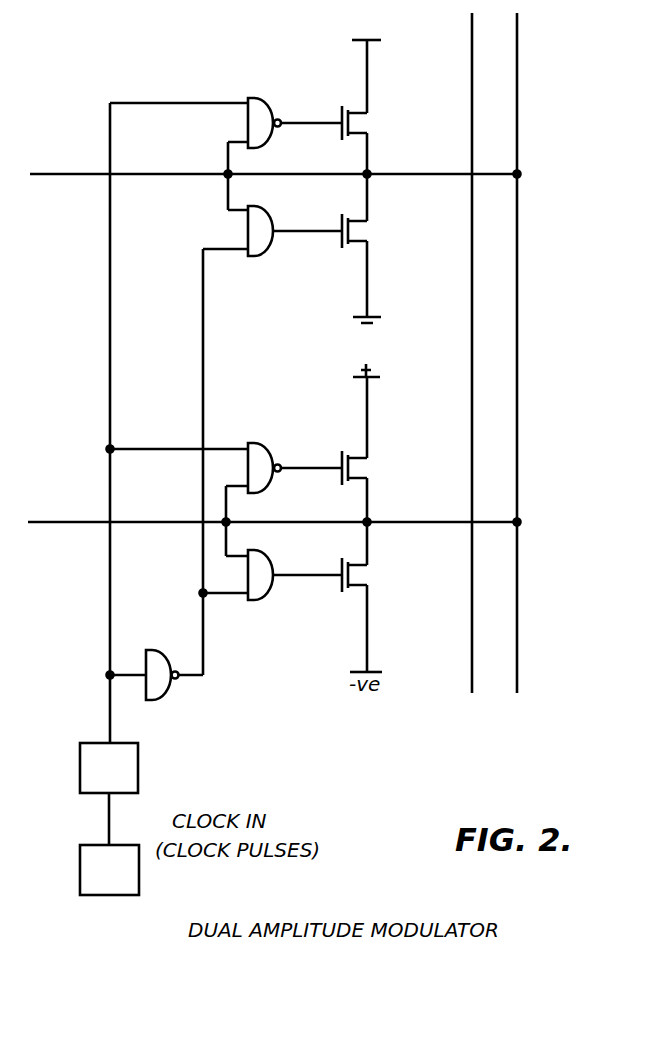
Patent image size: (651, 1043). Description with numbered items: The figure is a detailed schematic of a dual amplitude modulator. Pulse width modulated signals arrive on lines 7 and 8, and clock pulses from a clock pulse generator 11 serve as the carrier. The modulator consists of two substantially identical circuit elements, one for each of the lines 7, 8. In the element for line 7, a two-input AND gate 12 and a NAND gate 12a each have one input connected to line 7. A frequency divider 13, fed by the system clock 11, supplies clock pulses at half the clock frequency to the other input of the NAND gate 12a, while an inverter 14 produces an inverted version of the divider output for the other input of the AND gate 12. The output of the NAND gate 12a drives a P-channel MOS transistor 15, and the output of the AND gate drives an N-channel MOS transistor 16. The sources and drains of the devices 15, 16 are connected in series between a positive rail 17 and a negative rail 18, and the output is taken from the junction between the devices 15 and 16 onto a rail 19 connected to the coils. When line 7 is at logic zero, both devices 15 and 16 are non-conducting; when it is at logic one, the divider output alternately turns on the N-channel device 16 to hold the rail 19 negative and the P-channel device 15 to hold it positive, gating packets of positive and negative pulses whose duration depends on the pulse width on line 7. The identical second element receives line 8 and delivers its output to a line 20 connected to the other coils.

The line 7 is at (78, 173).
The line 8 is at (77, 521).
The clock pulse generator 11 is at (80, 868).
The AND gate 12 is at (262, 205).
The NAND gate 12a is at (259, 97).
The frequency divider 13 is at (139, 758).
The inverter 14 is at (156, 658).
The P-channel MOS transistor 15 is at (338, 117).
The N-channel MOS transistor 16 is at (340, 222).
The positive rail 17 is at (370, 40).
The negative rail 18 is at (373, 313).
The rail 19 is at (518, 103).
The line 20 is at (471, 418).